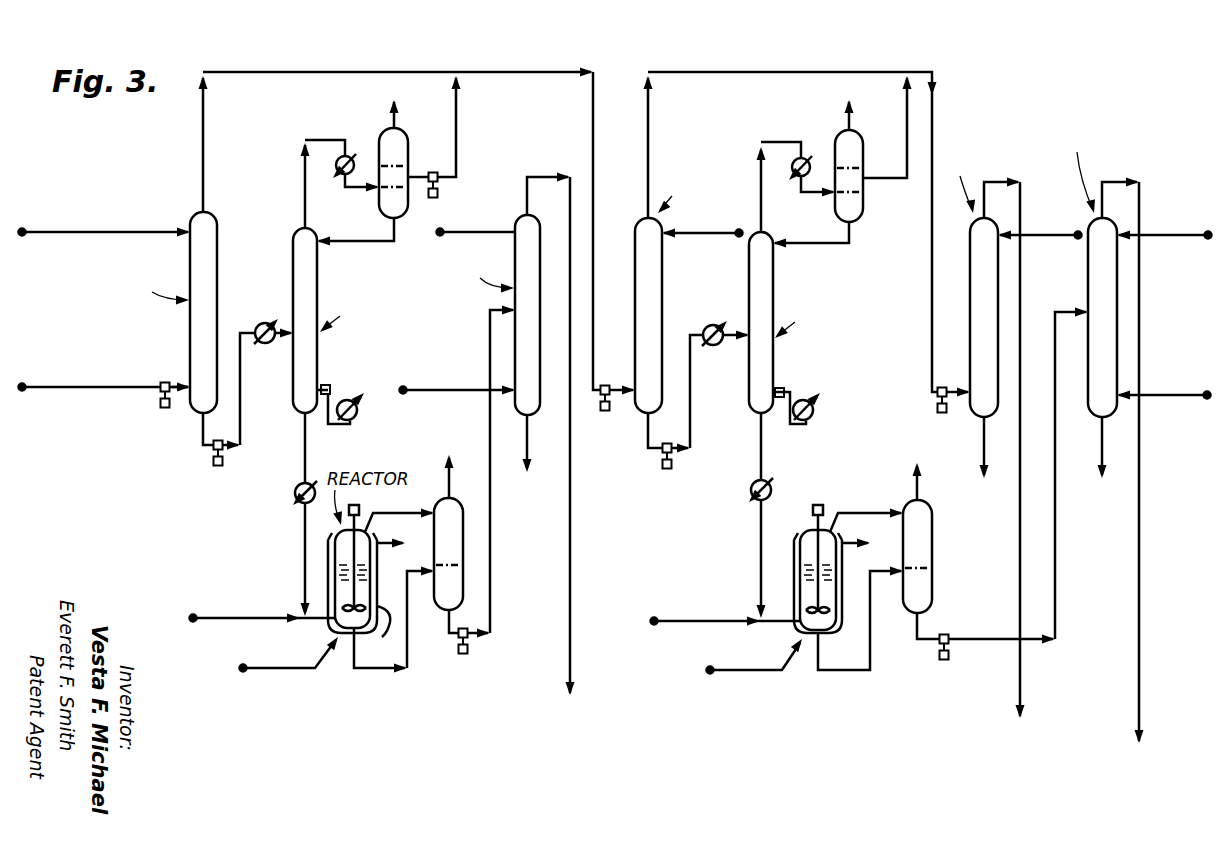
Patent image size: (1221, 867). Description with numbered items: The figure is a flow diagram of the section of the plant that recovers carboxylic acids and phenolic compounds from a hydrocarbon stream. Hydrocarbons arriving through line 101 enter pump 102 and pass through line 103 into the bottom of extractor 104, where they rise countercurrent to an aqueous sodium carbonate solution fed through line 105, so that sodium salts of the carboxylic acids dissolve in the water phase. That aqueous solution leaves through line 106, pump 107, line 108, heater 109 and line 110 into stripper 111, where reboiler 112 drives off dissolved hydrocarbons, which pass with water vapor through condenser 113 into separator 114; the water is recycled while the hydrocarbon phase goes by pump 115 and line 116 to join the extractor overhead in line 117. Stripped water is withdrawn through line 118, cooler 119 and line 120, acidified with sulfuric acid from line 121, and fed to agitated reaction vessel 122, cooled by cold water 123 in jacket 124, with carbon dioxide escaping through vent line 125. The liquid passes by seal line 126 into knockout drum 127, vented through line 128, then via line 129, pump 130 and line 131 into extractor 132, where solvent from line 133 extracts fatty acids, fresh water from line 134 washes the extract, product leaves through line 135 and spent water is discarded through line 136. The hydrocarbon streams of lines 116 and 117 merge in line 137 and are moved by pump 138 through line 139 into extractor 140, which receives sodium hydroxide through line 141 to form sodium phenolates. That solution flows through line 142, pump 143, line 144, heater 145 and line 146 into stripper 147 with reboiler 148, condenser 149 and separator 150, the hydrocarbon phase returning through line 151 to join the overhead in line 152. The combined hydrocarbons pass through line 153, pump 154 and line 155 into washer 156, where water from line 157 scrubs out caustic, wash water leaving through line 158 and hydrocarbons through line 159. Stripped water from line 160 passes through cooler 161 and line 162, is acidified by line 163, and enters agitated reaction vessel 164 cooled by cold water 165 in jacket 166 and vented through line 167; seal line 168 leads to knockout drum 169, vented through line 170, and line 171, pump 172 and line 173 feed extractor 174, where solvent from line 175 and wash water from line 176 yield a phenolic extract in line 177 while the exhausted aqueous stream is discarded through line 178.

The line 101 is at (75, 398).
The pump 102 is at (165, 408).
The line 103 is at (178, 385).
The extractor 104 is at (190, 328).
The line 105 is at (84, 232).
The line 106 is at (200, 440).
The pump 107 is at (214, 467).
The line 108 is at (241, 392).
The heater 109 is at (262, 324).
The line 110 is at (282, 336).
The stripper 111 is at (292, 264).
The reboiler 112 is at (356, 412).
The condenser 113 is at (339, 170).
The separator 114 is at (410, 138).
The pump 115 is at (438, 196).
The line 116 is at (460, 110).
The line 117 is at (205, 144).
The line 118 is at (303, 453).
The cooler 119 is at (296, 490).
The line 120 is at (303, 550).
The line 121 is at (203, 620).
The agitated reaction vessel 122 is at (358, 560).
The stream of cold water 123 is at (302, 664).
The jacket 124 is at (395, 640).
The vent line 125 is at (410, 514).
The seal line 126 is at (372, 670).
The knockout drum 127 is at (435, 530).
The line 128 is at (450, 478).
The line 129 is at (448, 622).
The pump 130 is at (458, 656).
The line 131 is at (491, 578).
The extractor 132 is at (555, 215).
The line 133 is at (416, 392).
The line 134 is at (450, 234).
The line 135 is at (555, 177).
The line 136 is at (532, 445).
The line 137 is at (599, 138).
The pump 138 is at (604, 408).
The line 139 is at (620, 386).
The extractor 140 is at (633, 226).
The line 141 is at (735, 240).
The line 142 is at (646, 430).
The pump 143 is at (663, 470).
The line 144 is at (692, 388).
The heater 145 is at (710, 326).
The line 146 is at (734, 338).
The stripper 147 is at (748, 298).
The reboiler 148 is at (815, 410).
The condenser 149 is at (794, 172).
The separator 150 is at (840, 130).
The line 151 is at (906, 128).
The line 152 is at (812, 74).
The line 153 is at (930, 262).
The pump 154 is at (936, 414).
The line 155 is at (956, 388).
The washer 156 is at (969, 296).
The line 157 is at (1029, 238).
The line 158 is at (988, 440).
The line 159 is at (1022, 194).
The line 160 is at (758, 451).
The cooler 161 is at (753, 484).
The line 162 is at (758, 538).
The line 163 is at (665, 623).
The agitated reaction vessel 164 is at (806, 534).
The stream of cold water 165 is at (776, 664).
The jacket 166 is at (797, 590).
The line 167 is at (842, 508).
The seal line 168 is at (830, 672).
The knockout drum 169 is at (904, 536).
The line 170 is at (915, 488).
The line 171 is at (925, 642).
The pump 172 is at (940, 663).
The line 173 is at (1005, 642).
The extractor 174 is at (1087, 296).
The line 175 is at (1150, 398).
The line 176 is at (1153, 238).
The line 177 is at (1140, 194).
The line 178 is at (1101, 444).